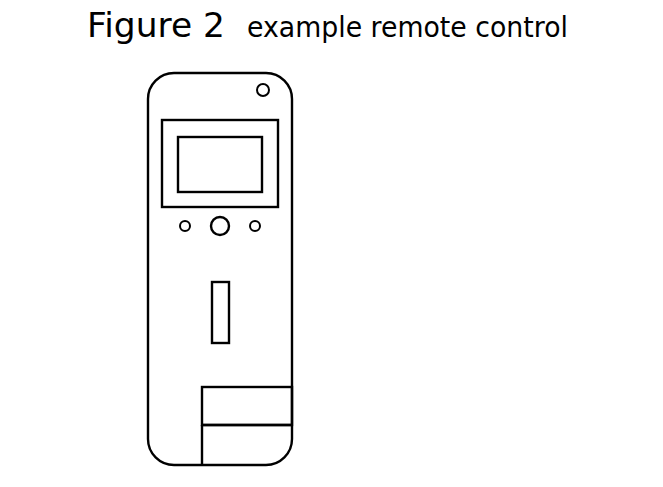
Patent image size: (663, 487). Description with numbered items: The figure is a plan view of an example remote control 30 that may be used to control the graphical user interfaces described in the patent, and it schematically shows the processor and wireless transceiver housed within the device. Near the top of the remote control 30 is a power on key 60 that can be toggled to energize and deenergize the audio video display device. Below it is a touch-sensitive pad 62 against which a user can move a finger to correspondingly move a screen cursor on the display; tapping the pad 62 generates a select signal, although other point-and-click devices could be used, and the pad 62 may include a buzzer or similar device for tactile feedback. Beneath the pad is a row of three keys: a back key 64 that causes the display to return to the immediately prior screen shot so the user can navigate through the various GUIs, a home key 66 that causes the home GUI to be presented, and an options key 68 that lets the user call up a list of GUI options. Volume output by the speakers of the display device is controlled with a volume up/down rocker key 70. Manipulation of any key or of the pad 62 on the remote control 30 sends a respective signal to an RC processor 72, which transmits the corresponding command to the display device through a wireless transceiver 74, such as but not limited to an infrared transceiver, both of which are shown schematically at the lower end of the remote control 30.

The remote control 30 is at (108, 164).
The power on key 60 is at (269, 86).
The touch-sensitive pad 62 is at (262, 159).
The back key 64 is at (180, 226).
The home key 66 is at (212, 232).
The options key 68 is at (261, 226).
The volume up/down rocker key 70 is at (229, 305).
The RC processor 72 is at (292, 407).
The wireless transceiver 74 is at (292, 431).